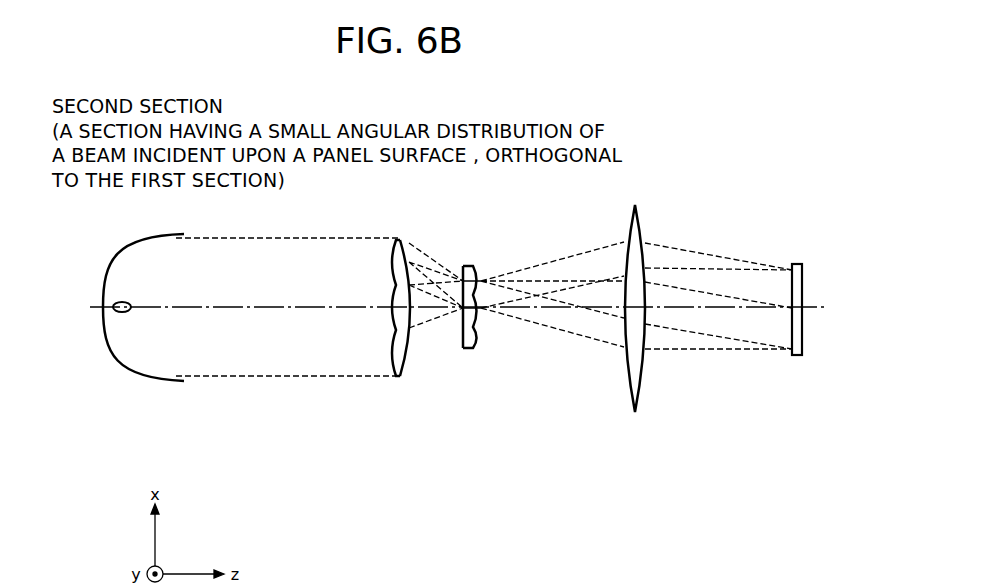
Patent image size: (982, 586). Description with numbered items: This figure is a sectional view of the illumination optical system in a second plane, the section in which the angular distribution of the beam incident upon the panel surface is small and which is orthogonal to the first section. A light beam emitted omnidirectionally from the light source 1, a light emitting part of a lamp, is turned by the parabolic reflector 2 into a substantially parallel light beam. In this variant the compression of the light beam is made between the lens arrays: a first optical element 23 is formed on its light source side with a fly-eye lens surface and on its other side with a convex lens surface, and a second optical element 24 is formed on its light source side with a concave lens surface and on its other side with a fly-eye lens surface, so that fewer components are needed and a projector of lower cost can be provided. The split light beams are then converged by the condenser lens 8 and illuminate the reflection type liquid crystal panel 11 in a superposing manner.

The light source 1 is at (122, 312).
The parabolic reflector 2 is at (155, 373).
The first optical element 23 is at (402, 377).
The second optical element 24 is at (471, 350).
The condenser lens 8 is at (635, 412).
The reflection type liquid crystal panel 11 is at (797, 356).